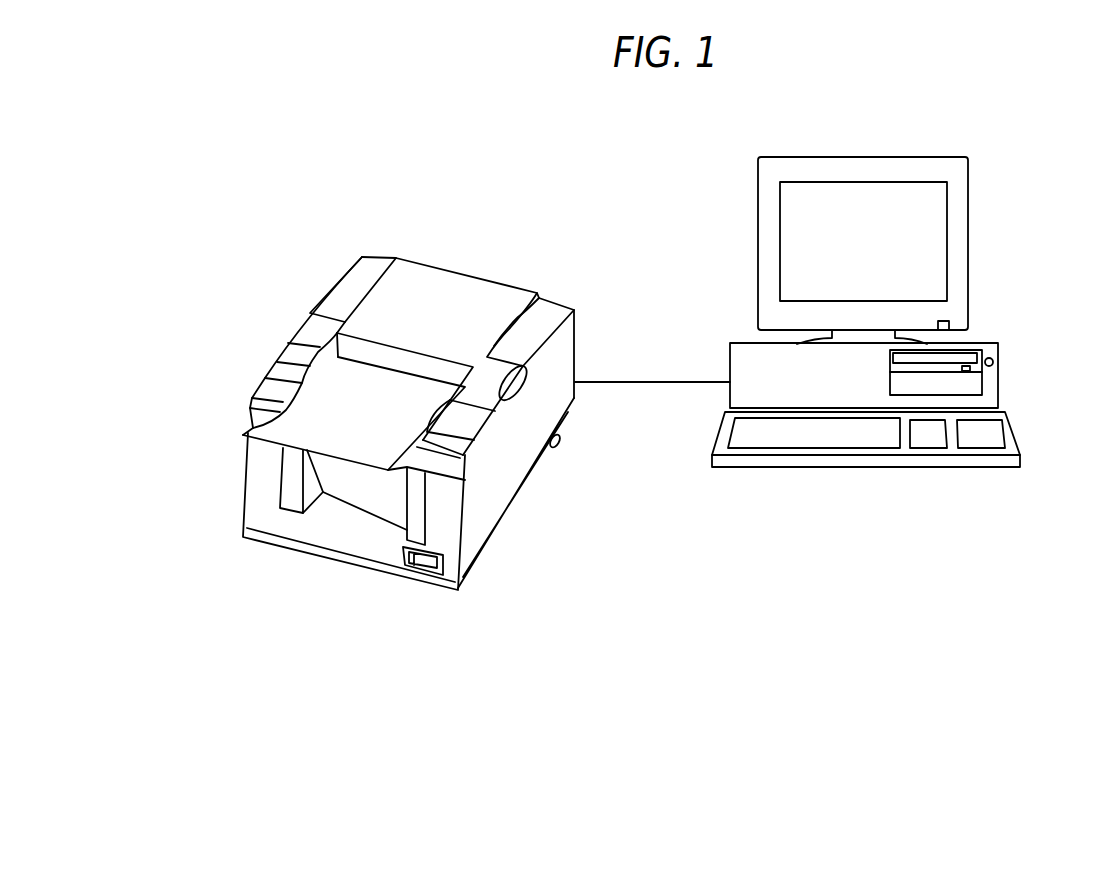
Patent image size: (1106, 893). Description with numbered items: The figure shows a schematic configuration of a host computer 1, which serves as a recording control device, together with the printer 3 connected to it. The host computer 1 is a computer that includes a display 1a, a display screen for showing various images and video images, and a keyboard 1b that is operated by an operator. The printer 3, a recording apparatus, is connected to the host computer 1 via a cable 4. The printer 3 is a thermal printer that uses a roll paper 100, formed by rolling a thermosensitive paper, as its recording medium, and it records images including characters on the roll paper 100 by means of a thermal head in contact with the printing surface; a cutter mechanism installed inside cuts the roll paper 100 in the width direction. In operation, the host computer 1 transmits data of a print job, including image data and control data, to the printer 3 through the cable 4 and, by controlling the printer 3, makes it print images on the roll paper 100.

The host computer 1 is at (986, 263).
The display 1a is at (938, 225).
The keyboard 1b is at (1012, 432).
The printer 3 is at (494, 246).
The cable 4 is at (645, 380).
The roll paper 100 is at (320, 392).